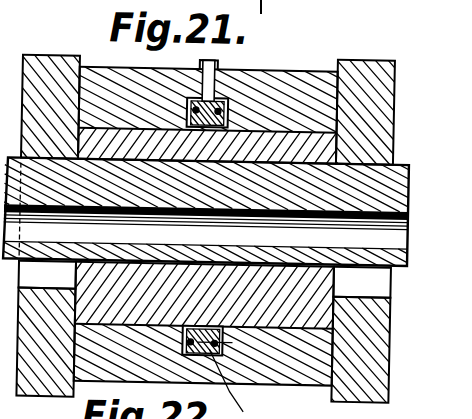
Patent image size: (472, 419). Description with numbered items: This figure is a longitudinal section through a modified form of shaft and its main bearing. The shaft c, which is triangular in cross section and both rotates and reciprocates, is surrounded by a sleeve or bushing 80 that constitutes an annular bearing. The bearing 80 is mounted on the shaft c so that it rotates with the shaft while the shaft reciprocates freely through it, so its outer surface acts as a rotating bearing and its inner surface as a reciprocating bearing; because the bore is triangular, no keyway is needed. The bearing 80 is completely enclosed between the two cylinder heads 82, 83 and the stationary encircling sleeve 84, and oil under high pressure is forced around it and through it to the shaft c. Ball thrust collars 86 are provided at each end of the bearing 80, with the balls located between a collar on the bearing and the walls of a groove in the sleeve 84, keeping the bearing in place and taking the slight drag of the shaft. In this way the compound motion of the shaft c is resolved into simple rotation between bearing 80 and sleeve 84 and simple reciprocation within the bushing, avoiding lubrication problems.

The cylinder head 82 is at (37, 66).
The encircling sleeve 84 is at (95, 71).
The sleeve or bushing 80 is at (259, 124).
The cylinder head 83 is at (353, 61).
The ball thrust collars 86 is at (225, 339).
The shaft c is at (40, 271).